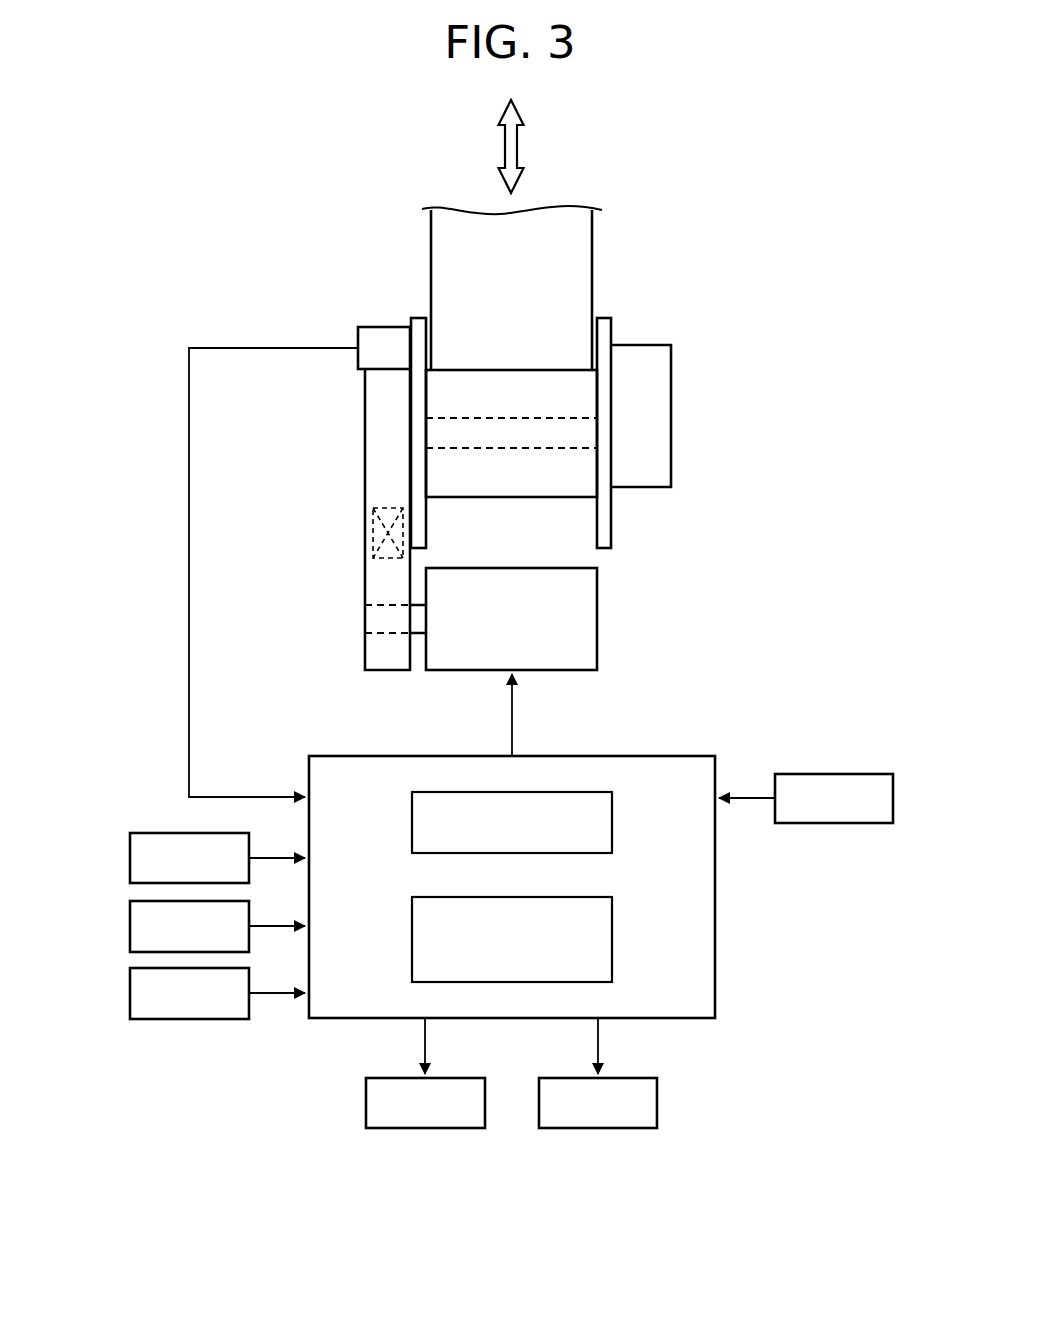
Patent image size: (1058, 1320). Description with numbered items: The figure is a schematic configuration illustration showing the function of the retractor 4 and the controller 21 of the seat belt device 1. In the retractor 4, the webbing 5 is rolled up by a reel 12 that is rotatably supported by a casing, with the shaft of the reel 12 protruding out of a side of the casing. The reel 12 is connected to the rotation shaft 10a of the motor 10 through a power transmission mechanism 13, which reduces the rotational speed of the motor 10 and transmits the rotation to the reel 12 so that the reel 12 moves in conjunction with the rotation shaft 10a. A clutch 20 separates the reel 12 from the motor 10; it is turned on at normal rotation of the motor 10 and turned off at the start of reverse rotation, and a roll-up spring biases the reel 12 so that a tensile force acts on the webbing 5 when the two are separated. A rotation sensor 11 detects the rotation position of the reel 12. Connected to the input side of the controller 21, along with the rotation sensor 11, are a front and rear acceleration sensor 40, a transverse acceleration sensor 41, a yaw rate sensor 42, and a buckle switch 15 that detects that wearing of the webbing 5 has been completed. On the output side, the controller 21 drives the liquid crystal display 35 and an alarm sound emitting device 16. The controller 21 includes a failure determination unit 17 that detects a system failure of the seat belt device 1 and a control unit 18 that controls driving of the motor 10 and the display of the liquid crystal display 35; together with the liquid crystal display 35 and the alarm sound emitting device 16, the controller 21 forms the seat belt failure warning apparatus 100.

The seat belt device 1 is at (494, 435).
The retractor 4 is at (625, 336).
The webbing 5 is at (461, 222).
The motor 10 is at (578, 620).
The rotation shaft 10a is at (420, 622).
The rotation sensor 11 is at (383, 325).
The reel 12 is at (563, 448).
The power transmission mechanism 13 is at (365, 441).
The buckle switch 15 is at (893, 800).
The alarm sound emitting device 16 is at (425, 1128).
The failure determination unit 17 is at (612, 937).
The control unit 18 is at (612, 822).
The clutch 20 is at (372, 531).
The controller 21 is at (547, 887).
The liquid crystal display 35 is at (598, 1128).
The front and rear acceleration sensor 40 is at (130, 858).
The transverse acceleration sensor 41 is at (130, 926).
The yaw rate sensor 42 is at (130, 993).
The seat belt failure warning apparatus 100 is at (511, 772).